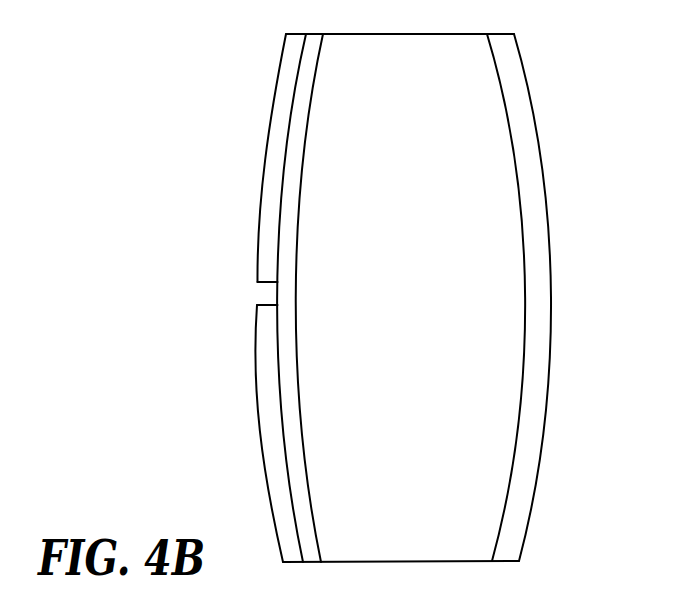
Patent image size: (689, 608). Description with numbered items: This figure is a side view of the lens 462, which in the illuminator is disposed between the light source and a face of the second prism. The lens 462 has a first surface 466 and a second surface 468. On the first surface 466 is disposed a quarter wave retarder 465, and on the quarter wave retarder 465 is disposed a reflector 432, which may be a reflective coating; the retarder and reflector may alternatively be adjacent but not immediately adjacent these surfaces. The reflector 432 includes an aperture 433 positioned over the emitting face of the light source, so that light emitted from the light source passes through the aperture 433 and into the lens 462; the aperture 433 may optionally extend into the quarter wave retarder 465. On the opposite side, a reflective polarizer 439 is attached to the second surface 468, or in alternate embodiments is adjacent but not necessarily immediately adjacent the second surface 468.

The lens 462 is at (347, 458).
The reflector 432 is at (267, 250).
The aperture 433 is at (257, 295).
The quarter wave retarder 465 is at (292, 197).
The first surface 466 is at (308, 127).
The second surface 468 is at (503, 498).
The reflective polarizer 439 is at (531, 416).